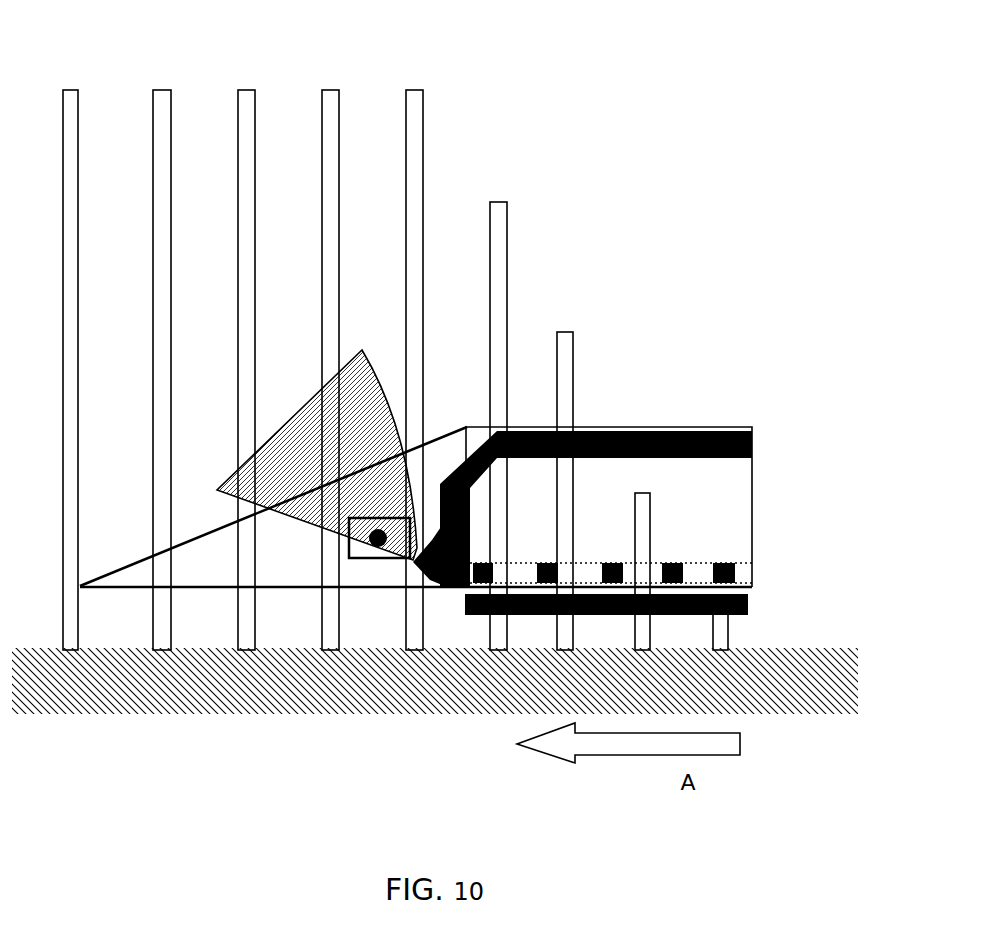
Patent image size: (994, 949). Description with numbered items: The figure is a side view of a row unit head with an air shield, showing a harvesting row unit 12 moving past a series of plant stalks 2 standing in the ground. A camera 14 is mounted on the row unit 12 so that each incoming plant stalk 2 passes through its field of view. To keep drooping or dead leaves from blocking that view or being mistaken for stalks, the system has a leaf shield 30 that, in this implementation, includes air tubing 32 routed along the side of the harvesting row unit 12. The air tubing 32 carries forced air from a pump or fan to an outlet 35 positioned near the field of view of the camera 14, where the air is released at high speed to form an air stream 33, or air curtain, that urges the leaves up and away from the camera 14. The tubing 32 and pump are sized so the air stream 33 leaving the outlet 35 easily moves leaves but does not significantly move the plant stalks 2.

The plant stalk 2 is at (243, 90).
The harvesting row unit 12 is at (739, 512).
The camera 14 is at (373, 560).
The leaf shield 30 is at (465, 603).
The air tubing 32 is at (634, 420).
The air stream 33 is at (400, 440).
The outlet 35 is at (418, 562).